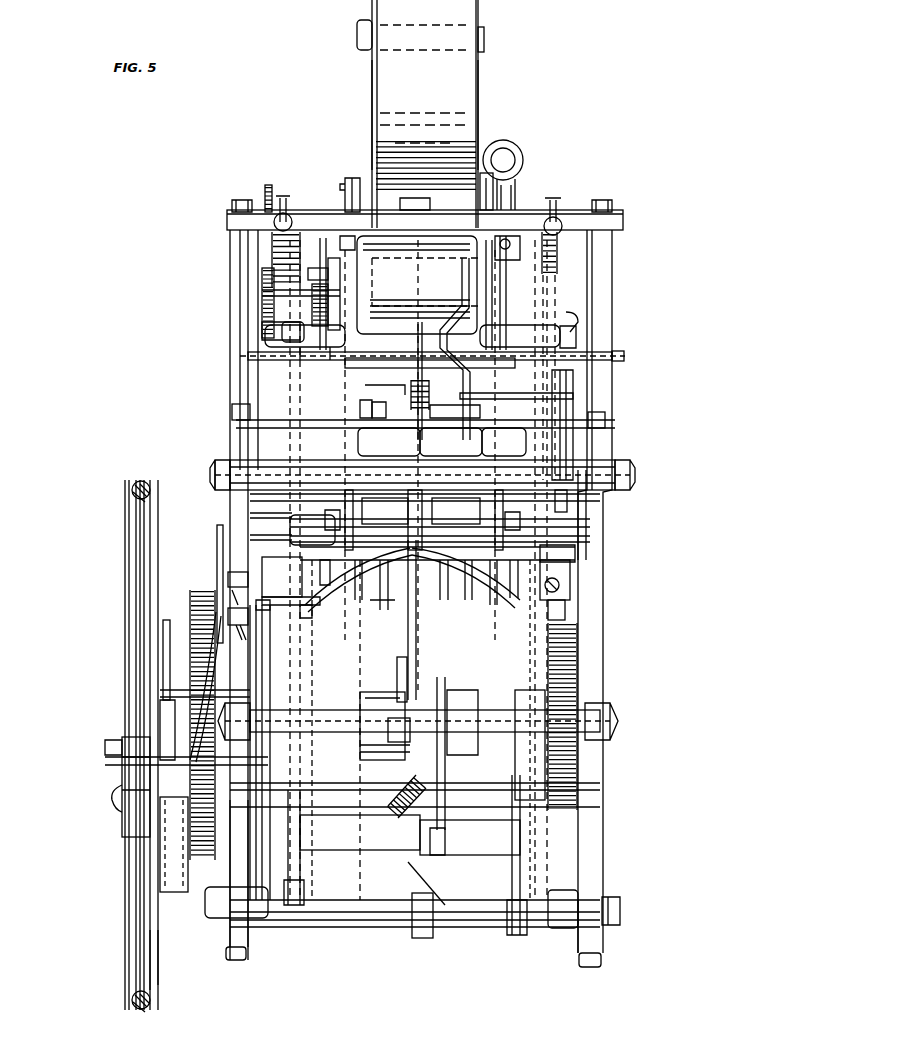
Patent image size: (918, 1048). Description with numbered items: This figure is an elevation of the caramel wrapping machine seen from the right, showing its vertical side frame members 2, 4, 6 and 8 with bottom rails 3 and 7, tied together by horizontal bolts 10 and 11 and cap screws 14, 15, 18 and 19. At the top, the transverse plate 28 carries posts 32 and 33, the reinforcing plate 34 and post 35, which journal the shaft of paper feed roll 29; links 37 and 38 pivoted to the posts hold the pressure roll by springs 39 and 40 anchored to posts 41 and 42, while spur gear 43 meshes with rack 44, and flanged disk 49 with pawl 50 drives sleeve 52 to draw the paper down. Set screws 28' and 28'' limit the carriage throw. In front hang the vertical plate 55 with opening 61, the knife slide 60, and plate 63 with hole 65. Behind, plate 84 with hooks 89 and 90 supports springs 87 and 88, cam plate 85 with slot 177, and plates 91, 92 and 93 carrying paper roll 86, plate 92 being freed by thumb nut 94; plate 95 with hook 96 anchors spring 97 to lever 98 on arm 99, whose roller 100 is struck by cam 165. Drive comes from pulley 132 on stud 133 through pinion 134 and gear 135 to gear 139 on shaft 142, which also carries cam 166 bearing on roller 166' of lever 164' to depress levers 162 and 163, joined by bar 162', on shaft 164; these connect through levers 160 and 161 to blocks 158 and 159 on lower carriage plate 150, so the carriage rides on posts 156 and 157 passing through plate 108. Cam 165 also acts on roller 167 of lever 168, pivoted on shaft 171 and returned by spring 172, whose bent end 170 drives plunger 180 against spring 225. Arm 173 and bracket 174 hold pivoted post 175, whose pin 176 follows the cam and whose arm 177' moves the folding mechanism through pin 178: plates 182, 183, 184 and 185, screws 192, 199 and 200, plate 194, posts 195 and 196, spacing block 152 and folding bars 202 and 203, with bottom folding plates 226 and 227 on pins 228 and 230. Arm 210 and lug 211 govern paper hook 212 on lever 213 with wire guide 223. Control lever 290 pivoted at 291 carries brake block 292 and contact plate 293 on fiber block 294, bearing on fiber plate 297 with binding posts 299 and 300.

The side frame member 2 is at (236, 432).
The bottom rail 3 is at (248, 947).
The side frame member 4 is at (248, 873).
The side frame member 6 is at (612, 450).
The bottom rail 7 is at (603, 947).
The side frame member 8 is at (604, 646).
The horizontally extending bolt 10 is at (245, 482).
The horizontally extending bolt 11 is at (562, 925).
The cap screw 14 is at (236, 961).
The cap screw 15 is at (232, 409).
The cap screw 18 is at (590, 968).
The cap screw 19 is at (605, 418).
The transversely extending plate 28 is at (446, 356).
The set screw 28' is at (571, 322).
The set screw 28'' is at (250, 331).
The paper feed roll 29 is at (402, 268).
The post 32 is at (494, 262).
The post 33 is at (345, 250).
The reinforcing plate 34 is at (335, 352).
The post 35 is at (262, 272).
The link 37 is at (493, 178).
The link 38 is at (345, 185).
The spiral spring 39 is at (512, 242).
The spiral spring 40 is at (340, 242).
The post 41 is at (328, 262).
The post 42 is at (506, 287).
The spur gear 43 is at (262, 297).
The rack 44 is at (265, 194).
The flanged disk 49 is at (312, 300).
The spring operating pawl 50 is at (312, 274).
The sleeve 52 is at (294, 330).
The vertically extending plate 55 is at (347, 407).
The knife slide 60 is at (410, 362).
The opening 61 is at (368, 392).
The plate 63 is at (398, 418).
The hole 65 is at (450, 418).
The plate 84 is at (623, 225).
The cam plate 85 is at (450, 262).
The paper feed roll 86 is at (420, 114).
The spring 87 is at (270, 244).
The spring 88 is at (558, 260).
The hook 89 is at (287, 206).
The hook 90 is at (560, 208).
The vertically extending plate 91 is at (372, 113).
The vertically extending plate 92 is at (480, 107).
The plate 93 is at (410, 216).
The thumb nut 94 is at (522, 160).
The transversely extending plate 95 is at (500, 428).
The hook 96 is at (372, 410).
The spring 97 is at (429, 392).
The lever 98 is at (418, 330).
The arm 99 is at (492, 445).
The roller 100 is at (385, 730).
The upper carriage plate 108 is at (330, 520).
The pulley 132 is at (126, 586).
The stud 133 is at (118, 750).
The pinion 134 is at (201, 756).
The large gear 135 is at (200, 590).
The gear 139 is at (575, 675).
The shaft 142 is at (333, 712).
The lower carriage plate 150 is at (575, 550).
The spacing block 152 is at (422, 506).
The post 156 is at (565, 612).
The post 157 is at (312, 612).
The block 158 is at (570, 580).
The block 159 is at (245, 560).
The lever 160 is at (528, 654).
The lever 161 is at (313, 655).
The lever 162 is at (538, 855).
The bar 162' is at (317, 850).
The lever 163 is at (385, 850).
The shaft 164 is at (470, 844).
The lever 164' is at (443, 886).
The cam 165 is at (396, 660).
The cam 166 is at (457, 741).
The roller 166' is at (453, 839).
The roller 167 is at (386, 690).
The lever 168 is at (410, 905).
The bent end 170 is at (418, 600).
The shaft 171 is at (480, 940).
The spring 172 is at (404, 796).
The arm 173 is at (573, 410).
The bracket 174 is at (575, 560).
The pivoted post 175 is at (600, 525).
The pin 176 is at (500, 392).
The slot 177 is at (431, 349).
The arm 177' is at (492, 594).
The pin 178 is at (373, 507).
The plunger 180 is at (514, 586).
The plate 182 is at (590, 538).
The plate 183 is at (590, 522).
The plate 184 is at (290, 520).
The plate 185 is at (290, 537).
The large headed screw 192 is at (291, 581).
The plate 194 is at (520, 520).
The post 195 is at (345, 494).
The post 196 is at (502, 506).
The large headed screw 199 is at (312, 530).
The large headed screw 200 is at (555, 495).
The folding bar 202 is at (456, 511).
The folding bar 203 is at (385, 510).
The arm 210 is at (330, 596).
The lug 211 is at (262, 612).
The paper feeding hook 212 is at (256, 696).
The lever 213 is at (270, 664).
The wire guide 223 is at (262, 680).
The spring 225 is at (386, 612).
The bottom folding plate 226 is at (478, 610).
The bottom folding plate 227 is at (362, 598).
The pin 228 is at (463, 587).
The pin 230 is at (330, 572).
The lever 290 is at (167, 620).
The pivot 291 is at (167, 960).
The brake block 292 is at (112, 800).
The split contact plate 293 is at (160, 693).
The fiber block 294 is at (170, 855).
The fiber plate 297 is at (217, 535).
The binding post 299 is at (203, 626).
The binding post 300 is at (228, 575).